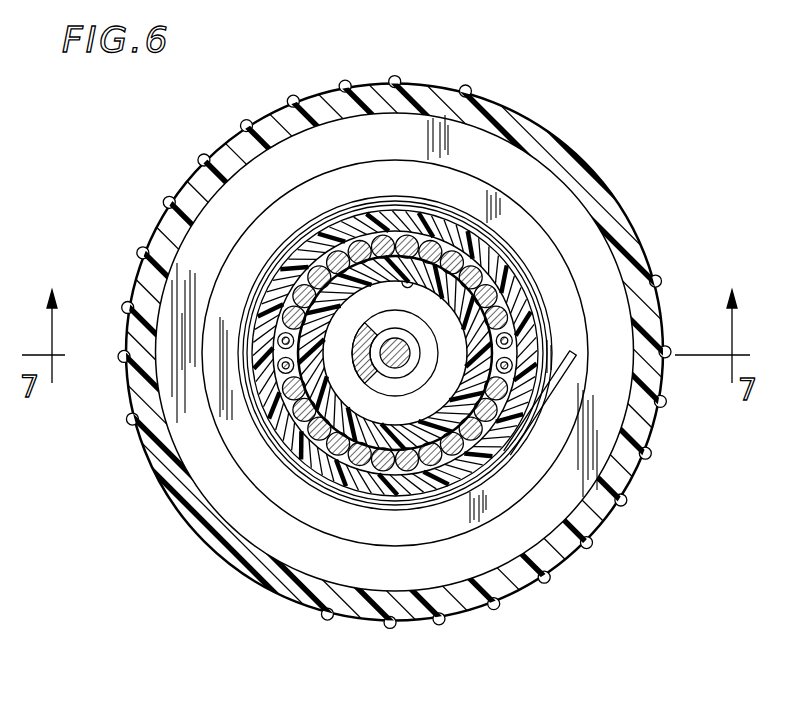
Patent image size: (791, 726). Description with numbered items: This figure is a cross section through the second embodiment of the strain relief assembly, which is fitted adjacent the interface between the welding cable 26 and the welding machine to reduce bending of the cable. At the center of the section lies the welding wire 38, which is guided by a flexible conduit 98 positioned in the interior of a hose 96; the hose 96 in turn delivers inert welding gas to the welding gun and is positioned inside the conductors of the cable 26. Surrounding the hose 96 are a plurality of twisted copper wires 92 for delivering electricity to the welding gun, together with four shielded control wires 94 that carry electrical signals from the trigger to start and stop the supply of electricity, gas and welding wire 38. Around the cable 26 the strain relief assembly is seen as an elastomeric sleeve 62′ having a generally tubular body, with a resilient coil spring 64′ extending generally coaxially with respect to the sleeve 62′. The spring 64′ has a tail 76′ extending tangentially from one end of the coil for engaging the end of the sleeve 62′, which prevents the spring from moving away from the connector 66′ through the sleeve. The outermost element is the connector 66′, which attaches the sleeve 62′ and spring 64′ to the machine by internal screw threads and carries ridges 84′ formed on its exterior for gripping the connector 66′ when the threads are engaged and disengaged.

The welding cable 26 is at (305, 492).
The welding wire 38 is at (406, 342).
The elastomeric sleeve 62′ is at (247, 455).
The resilient coil spring 64′ is at (553, 291).
The connector 66′ is at (398, 362).
The tail 76′ is at (612, 458).
The ridges 84′ is at (201, 156).
The twisted copper wires 92 is at (398, 218).
The shielded control wires 94 is at (275, 364).
The hose 96 is at (437, 247).
The flexible conduit 98 is at (420, 392).